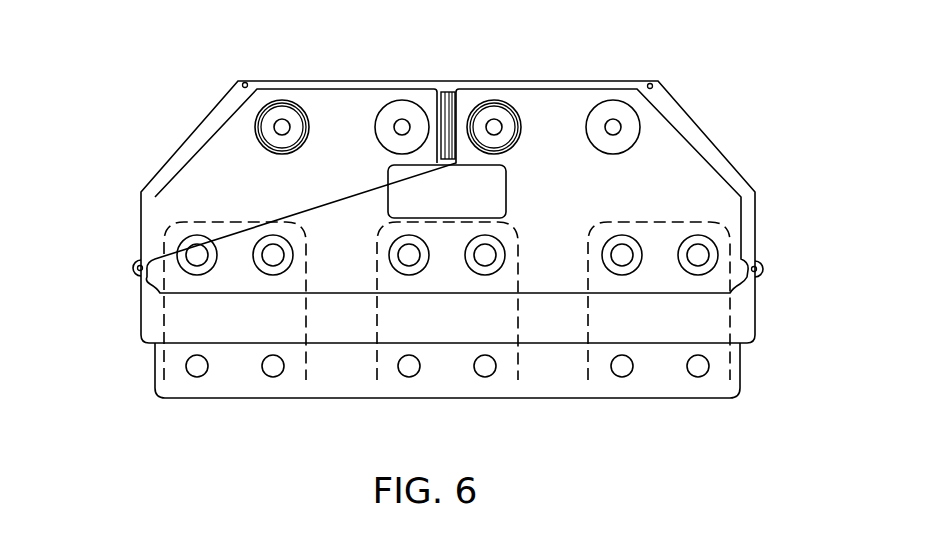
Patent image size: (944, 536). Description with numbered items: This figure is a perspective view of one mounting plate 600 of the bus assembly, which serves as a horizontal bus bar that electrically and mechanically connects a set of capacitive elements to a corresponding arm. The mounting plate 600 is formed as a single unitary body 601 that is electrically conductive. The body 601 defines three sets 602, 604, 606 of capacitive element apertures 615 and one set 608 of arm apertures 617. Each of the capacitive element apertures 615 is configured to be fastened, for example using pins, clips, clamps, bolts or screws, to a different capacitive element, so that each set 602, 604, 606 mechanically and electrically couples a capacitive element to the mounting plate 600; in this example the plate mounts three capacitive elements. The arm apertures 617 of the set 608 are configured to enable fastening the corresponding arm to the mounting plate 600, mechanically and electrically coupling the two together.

The mounting plate 600 is at (178, 68).
The body 601 is at (687, 175).
The first set of capacitive element apertures 602 is at (164, 404).
The second set of capacitive element apertures 604 is at (518, 404).
The third set of capacitive element apertures 606 is at (588, 404).
The set of arm apertures 608 is at (400, 67).
The capacitive element apertures 615 is at (180, 248).
The arm apertures 617 is at (282, 103).